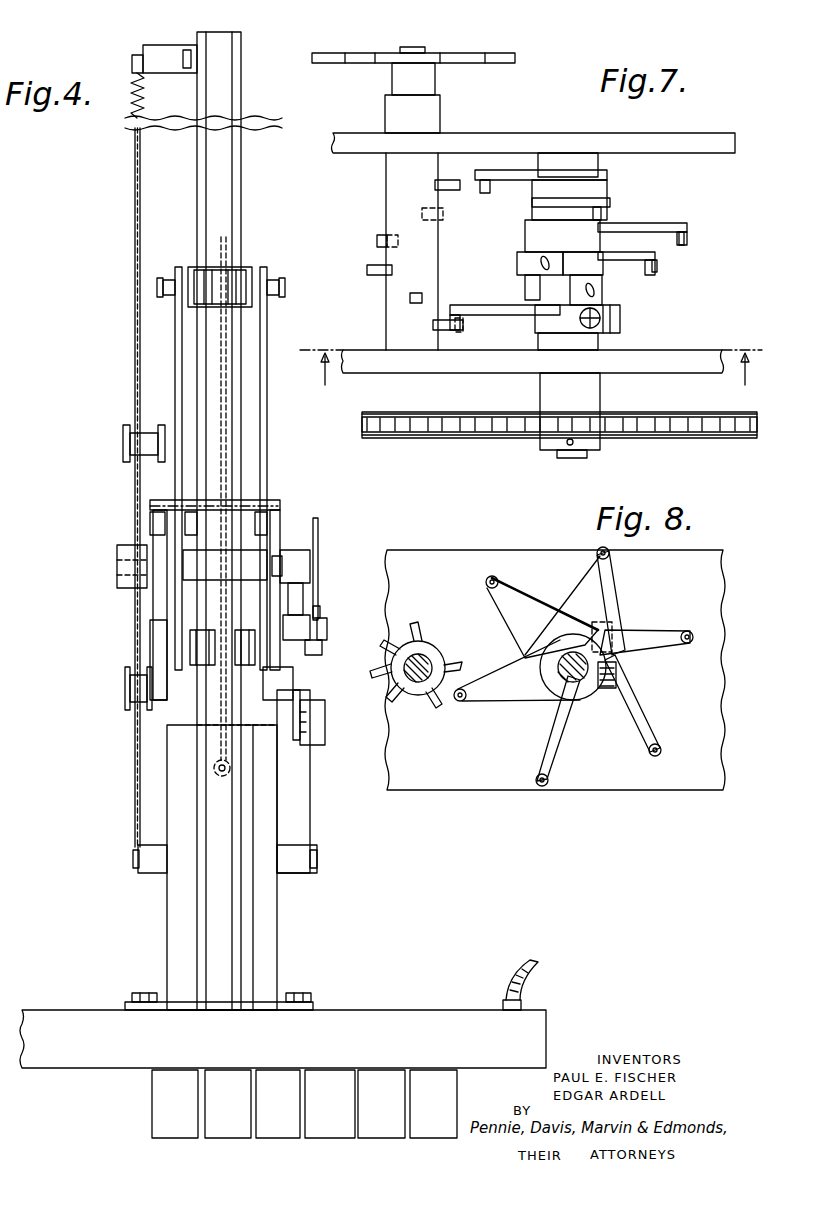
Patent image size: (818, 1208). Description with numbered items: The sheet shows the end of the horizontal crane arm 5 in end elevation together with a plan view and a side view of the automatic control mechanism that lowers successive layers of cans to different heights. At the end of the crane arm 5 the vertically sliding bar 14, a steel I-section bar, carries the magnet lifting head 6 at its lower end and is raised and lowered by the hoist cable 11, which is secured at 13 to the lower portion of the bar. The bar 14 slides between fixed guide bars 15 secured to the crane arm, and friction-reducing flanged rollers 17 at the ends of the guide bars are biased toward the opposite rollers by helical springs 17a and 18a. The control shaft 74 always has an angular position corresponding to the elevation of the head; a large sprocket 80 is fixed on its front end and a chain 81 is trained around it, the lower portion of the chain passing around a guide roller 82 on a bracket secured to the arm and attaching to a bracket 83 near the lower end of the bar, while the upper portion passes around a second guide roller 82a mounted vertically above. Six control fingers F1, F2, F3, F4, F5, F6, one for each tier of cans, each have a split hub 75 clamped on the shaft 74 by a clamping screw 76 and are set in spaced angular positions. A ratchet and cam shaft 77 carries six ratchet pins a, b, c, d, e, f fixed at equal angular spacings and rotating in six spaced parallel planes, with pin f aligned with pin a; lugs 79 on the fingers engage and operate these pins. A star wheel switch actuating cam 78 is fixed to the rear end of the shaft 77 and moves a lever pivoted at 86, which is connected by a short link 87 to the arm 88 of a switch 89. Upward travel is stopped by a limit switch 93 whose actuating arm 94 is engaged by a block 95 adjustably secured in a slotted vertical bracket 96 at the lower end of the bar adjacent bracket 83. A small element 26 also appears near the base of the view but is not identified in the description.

In FIG. 4, the horizontal crane arm 5 is at (170, 590).
In FIG. 7, the horizontal crane arm 5 is at (722, 140).
In FIG. 4, the magnet lifting head 6 is at (416, 1018).
In FIG. 4, the hoist cable 11 is at (218, 383).
In FIG. 4, the cable securing point 13 is at (215, 775).
In FIG. 4, the vertically sliding bar 14 is at (230, 165).
In FIG. 4, the fixed guide bars 15 is at (178, 335).
In FIG. 4, the flanged rollers 17 is at (240, 268).
In FIG. 4, the helical spring 17a is at (160, 288).
In FIG. 4, the helical spring 18a is at (282, 288).
In FIG. 4, the conduit 26 is at (516, 972).
In FIG. 4, the control shaft 74 is at (122, 560).
In FIG. 7, the control shaft 74 is at (572, 459).
In FIG. 8, the control shaft 74 is at (575, 700).
In FIG. 8, the split hub 75 is at (618, 676).
In FIG. 7, the clamping screw 76 is at (602, 318).
In FIG. 8, the clamping screw 76 is at (605, 635).
In FIG. 4, the ratchet and cam shaft 77 is at (299, 550).
In FIG. 7, the ratchet and cam shaft 77 is at (426, 50).
In FIG. 8, the ratchet and cam shaft 77 is at (432, 660).
In FIG. 4, the star wheel switch actuating cam 78 is at (318, 522).
In FIG. 7, the star wheel switch actuating cam 78 is at (505, 63).
In FIG. 7, the lugs 79 is at (648, 270).
In FIG. 8, the lugs 79 is at (487, 578).
In FIG. 4, the sprocket 80 is at (148, 633).
In FIG. 7, the sprocket 80 is at (487, 438).
In FIG. 4, the chain 81 is at (134, 211).
In FIG. 7, the chain 81 is at (680, 435).
In FIG. 4, the guide roller 82 is at (125, 700).
In FIG. 4, the second guide roller 82a is at (123, 436).
In FIG. 4, the bracket 83 is at (150, 872).
In FIG. 4, the lever pivot 86 is at (320, 612).
In FIG. 4, the short link 87 is at (327, 628).
In FIG. 4, the switch arm 88 is at (322, 647).
In FIG. 4, the switch 89 is at (292, 640).
In FIG. 4, the limit switch 93 is at (293, 676).
In FIG. 4, the actuating arm 94 is at (296, 718).
In FIG. 4, the block 95 is at (318, 740).
In FIG. 4, the slotted vertical bracket 96 is at (306, 826).
In FIG. 7, the control finger F1 is at (515, 312).
In FIG. 8, the control finger F1 is at (520, 700).
In FIG. 7, the control finger F2 is at (528, 272).
In FIG. 8, the control finger F2 is at (536, 755).
In FIG. 7, the control finger F3 is at (660, 258).
In FIG. 8, the control finger F3 is at (652, 735).
In FIG. 7, the control finger F4 is at (680, 225).
In FIG. 8, the control finger F4 is at (660, 630).
In FIG. 7, the control finger F5 is at (600, 200).
In FIG. 8, the control finger F5 is at (610, 560).
In FIG. 7, the control finger F6 is at (508, 170).
In FIG. 8, the control finger F6 is at (518, 595).
In FIG. 7, the ratchet pin a is at (436, 328).
In FIG. 8, the ratchet pin a is at (462, 666).
In FIG. 7, the ratchet pin b is at (414, 286).
In FIG. 8, the ratchet pin b is at (424, 625).
In FIG. 7, the ratchet pin c is at (370, 276).
In FIG. 8, the ratchet pin c is at (382, 642).
In FIG. 7, the ratchet pin d is at (379, 244).
In FIG. 8, the ratchet pin d is at (392, 704).
In FIG. 7, the ratchet pin e is at (443, 214).
In FIG. 8, the ratchet pin e is at (438, 710).
In FIG. 7, the ratchet pin f is at (460, 176).